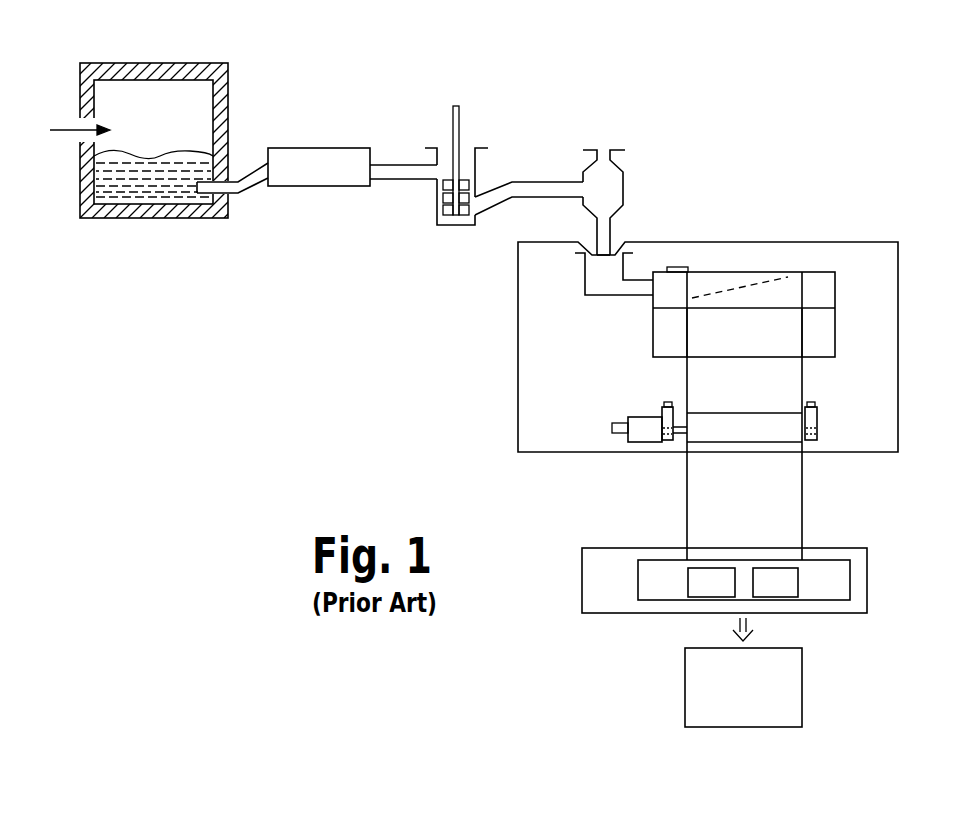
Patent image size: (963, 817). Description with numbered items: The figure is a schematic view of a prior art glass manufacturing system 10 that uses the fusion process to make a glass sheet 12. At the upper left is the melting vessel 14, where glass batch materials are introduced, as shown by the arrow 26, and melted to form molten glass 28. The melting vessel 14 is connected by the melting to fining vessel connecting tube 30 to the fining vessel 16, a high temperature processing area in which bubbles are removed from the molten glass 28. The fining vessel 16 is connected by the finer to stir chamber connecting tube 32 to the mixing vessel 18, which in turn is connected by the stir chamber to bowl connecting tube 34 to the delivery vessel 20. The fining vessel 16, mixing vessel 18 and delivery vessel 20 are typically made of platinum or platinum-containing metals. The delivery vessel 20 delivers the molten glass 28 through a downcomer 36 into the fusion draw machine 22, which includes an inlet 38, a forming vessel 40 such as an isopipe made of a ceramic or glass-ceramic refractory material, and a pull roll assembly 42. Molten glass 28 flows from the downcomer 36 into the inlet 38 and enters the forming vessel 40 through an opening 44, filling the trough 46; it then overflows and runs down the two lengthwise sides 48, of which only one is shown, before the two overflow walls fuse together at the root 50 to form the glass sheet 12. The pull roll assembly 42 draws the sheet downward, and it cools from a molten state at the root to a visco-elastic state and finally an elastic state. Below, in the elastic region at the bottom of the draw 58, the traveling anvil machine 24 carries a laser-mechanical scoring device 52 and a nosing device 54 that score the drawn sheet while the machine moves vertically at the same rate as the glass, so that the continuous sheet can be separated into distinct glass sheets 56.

The glass manufacturing system 10 is at (692, 82).
The glass sheet 12 is at (687, 390).
The melting vessel 14 is at (133, 63).
The fining vessel 16 is at (310, 148).
The mixing vessel 18 is at (480, 166).
The delivery vessel 20 is at (626, 182).
The fusion draw machine 22 is at (518, 347).
The traveling anvil machine 24 is at (638, 583).
The arrow 26 is at (62, 130).
The molten glass 28 is at (173, 153).
The melting to fining vessel connecting tube 30 is at (252, 168).
The finer to stir chamber connecting tube 32 is at (400, 180).
The stir chamber to bowl connecting tube 34 is at (556, 197).
The downcomer 36 is at (614, 228).
The inlet 38 is at (585, 295).
The forming vessel 40 is at (835, 290).
The pull roll assembly 42 is at (820, 425).
The opening 44 is at (653, 300).
The trough 46 is at (726, 283).
The lengthwise sides 48 is at (726, 335).
The root 50 is at (768, 358).
The laser-mechanical scoring device 52 is at (713, 583).
The nosing device 54 is at (770, 583).
The glass sheets 56 is at (685, 697).
The bottom of the draw 58 is at (648, 548).